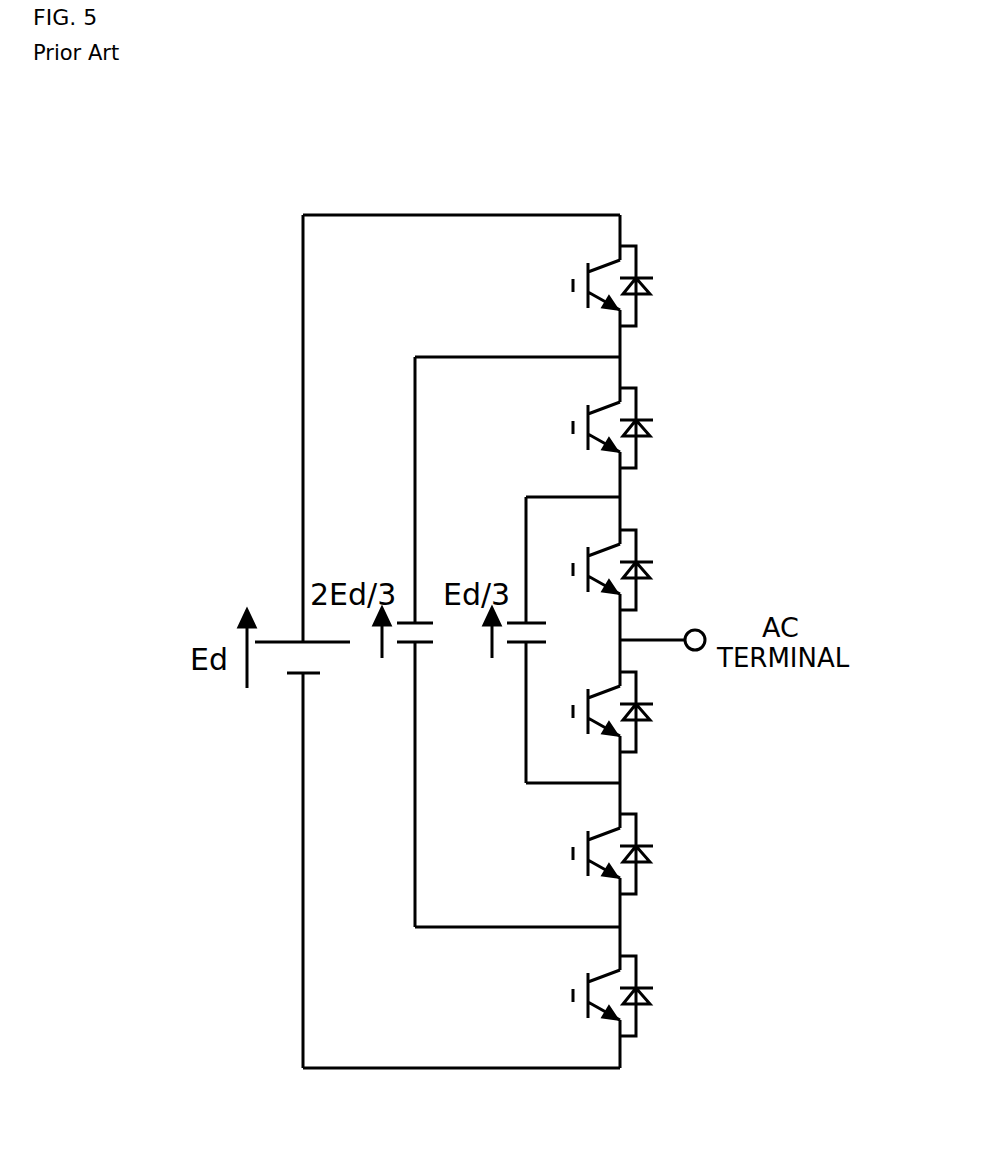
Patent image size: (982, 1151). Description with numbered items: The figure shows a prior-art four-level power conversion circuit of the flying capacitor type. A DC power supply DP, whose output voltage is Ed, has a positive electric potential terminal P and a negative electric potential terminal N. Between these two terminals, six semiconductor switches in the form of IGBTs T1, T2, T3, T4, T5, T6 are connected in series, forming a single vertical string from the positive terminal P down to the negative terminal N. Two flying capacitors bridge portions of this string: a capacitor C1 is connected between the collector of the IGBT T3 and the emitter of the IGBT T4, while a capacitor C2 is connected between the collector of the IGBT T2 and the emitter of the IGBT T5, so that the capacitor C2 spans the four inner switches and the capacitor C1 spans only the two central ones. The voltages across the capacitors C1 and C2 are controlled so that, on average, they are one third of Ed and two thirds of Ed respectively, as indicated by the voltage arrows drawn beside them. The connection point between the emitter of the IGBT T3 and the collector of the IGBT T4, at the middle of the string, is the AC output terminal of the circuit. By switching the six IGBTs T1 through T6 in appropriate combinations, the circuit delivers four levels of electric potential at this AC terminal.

The IGBT T1 is at (625, 277).
The IGBT T2 is at (625, 421).
The IGBT T3 is at (625, 567).
The IGBT T4 is at (625, 710).
The IGBT T5 is at (625, 851).
The IGBT T6 is at (625, 995).
The capacitor C1 is at (551, 640).
The capacitor C2 is at (495, 642).
The DC power supply DP is at (302, 641).
The positive electric potential terminal P is at (445, 216).
The negative electric potential terminal N is at (444, 1074).